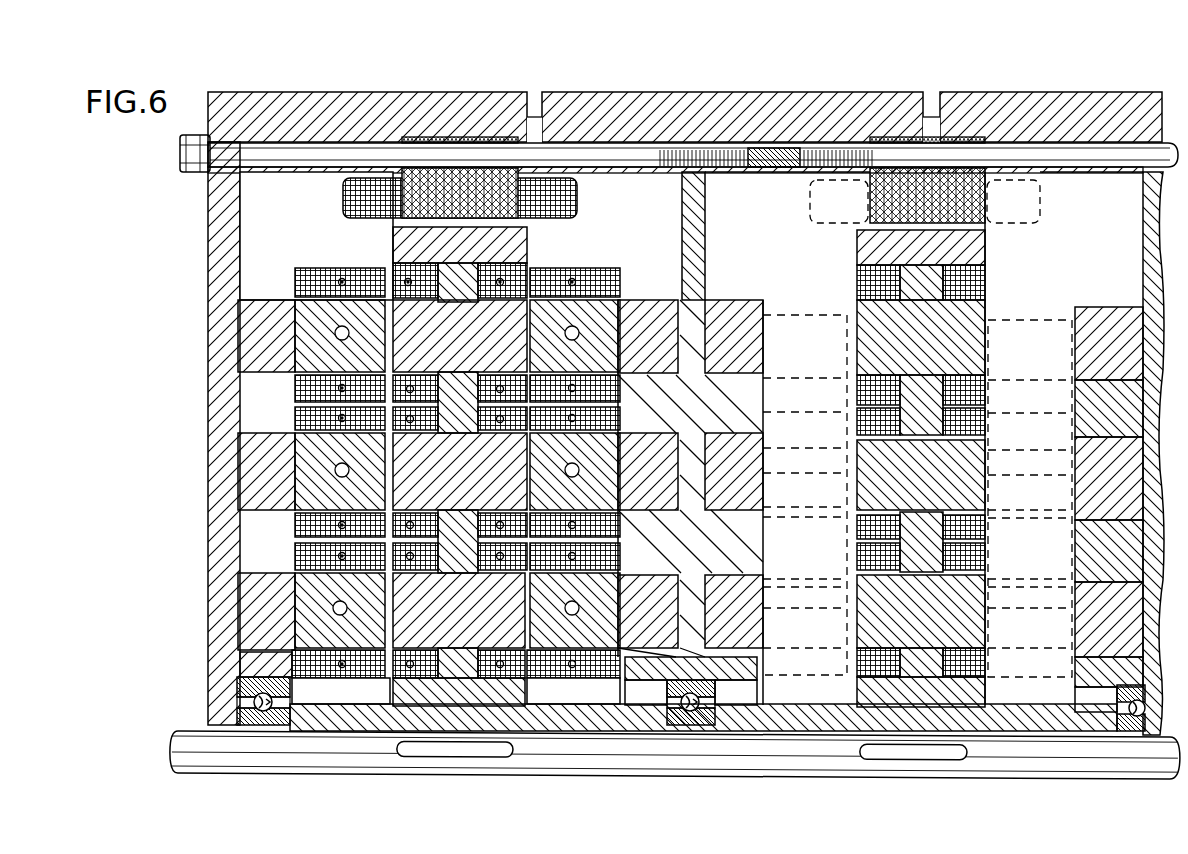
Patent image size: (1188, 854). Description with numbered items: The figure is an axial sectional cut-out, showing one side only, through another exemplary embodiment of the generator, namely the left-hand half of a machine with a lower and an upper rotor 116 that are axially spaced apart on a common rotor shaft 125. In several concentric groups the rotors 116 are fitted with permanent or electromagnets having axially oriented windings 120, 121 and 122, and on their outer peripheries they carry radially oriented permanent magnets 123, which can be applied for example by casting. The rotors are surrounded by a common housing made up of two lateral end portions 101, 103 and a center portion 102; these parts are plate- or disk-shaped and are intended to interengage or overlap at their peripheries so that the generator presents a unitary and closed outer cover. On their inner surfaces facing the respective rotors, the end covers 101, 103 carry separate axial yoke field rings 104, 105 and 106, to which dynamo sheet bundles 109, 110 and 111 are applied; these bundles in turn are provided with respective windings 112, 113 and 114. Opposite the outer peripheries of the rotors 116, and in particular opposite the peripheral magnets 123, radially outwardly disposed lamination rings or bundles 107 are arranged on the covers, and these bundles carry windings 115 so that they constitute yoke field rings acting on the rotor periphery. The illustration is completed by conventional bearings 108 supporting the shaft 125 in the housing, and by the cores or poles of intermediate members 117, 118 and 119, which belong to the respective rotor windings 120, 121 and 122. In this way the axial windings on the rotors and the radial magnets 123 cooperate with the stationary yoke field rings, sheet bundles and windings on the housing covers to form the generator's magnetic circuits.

The end portion 101 is at (258, 106).
The center portion 102 is at (731, 118).
The end portion 103 is at (1070, 108).
The axial yoke field ring 104 is at (256, 590).
The axial yoke field ring 105 is at (250, 465).
The axial yoke field ring 106 is at (262, 322).
The lamination ring 107 is at (455, 184).
The bearing 108 is at (256, 724).
The dynamo sheet bundle 109 is at (315, 624).
The dynamo sheet bundle 110 is at (316, 490).
The dynamo sheet bundle 111 is at (356, 360).
The winding 112 is at (272, 667).
The winding 113 is at (310, 525).
The winding 114 is at (298, 390).
The winding 115 is at (375, 192).
The rotor 116 is at (365, 712).
The core of intermediate member 117 is at (458, 623).
The core of intermediate member 118 is at (462, 490).
The core of intermediate member 119 is at (512, 320).
The winding 120 is at (485, 670).
The winding 121 is at (504, 543).
The winding 122 is at (494, 424).
The permanent magnet 123 is at (425, 246).
The rotor shaft 125 is at (630, 750).